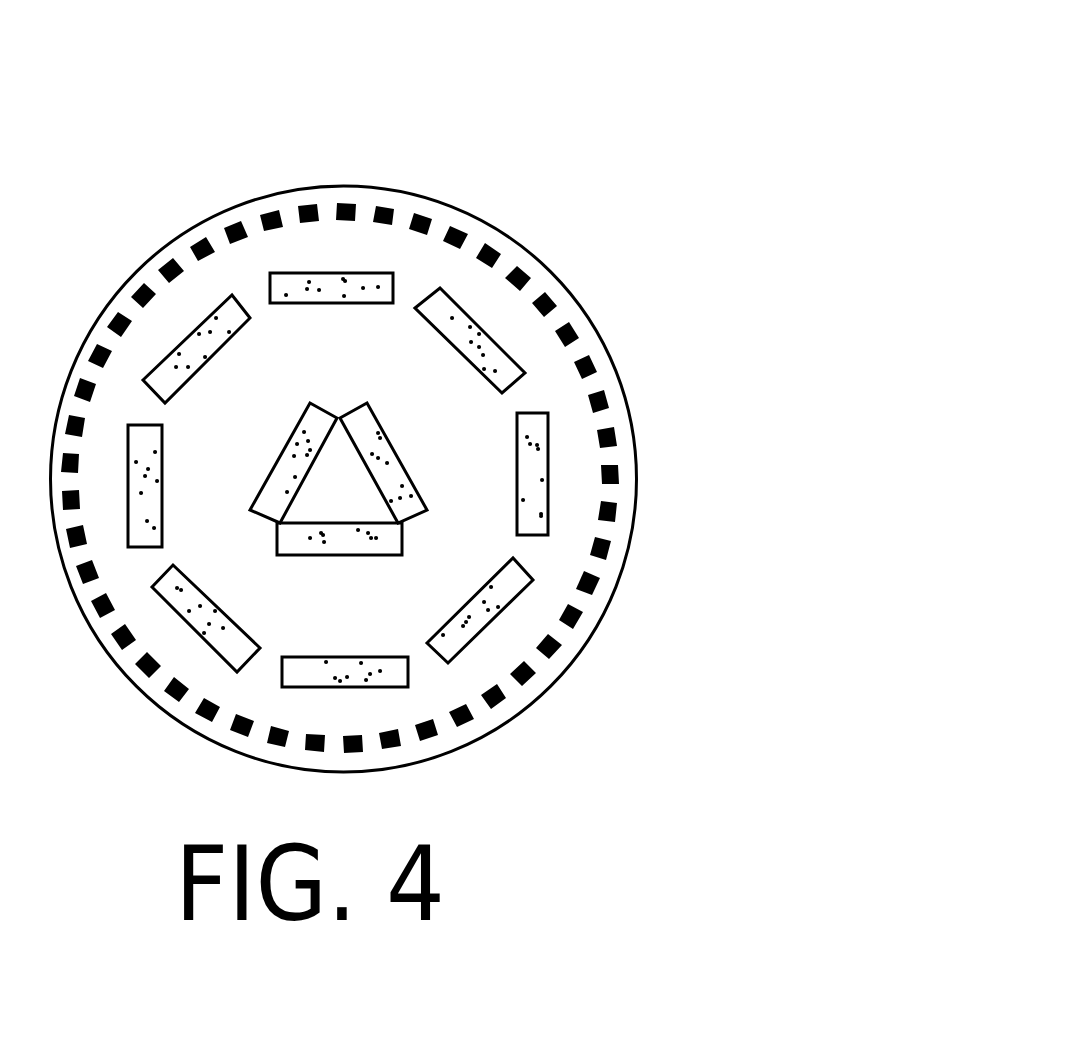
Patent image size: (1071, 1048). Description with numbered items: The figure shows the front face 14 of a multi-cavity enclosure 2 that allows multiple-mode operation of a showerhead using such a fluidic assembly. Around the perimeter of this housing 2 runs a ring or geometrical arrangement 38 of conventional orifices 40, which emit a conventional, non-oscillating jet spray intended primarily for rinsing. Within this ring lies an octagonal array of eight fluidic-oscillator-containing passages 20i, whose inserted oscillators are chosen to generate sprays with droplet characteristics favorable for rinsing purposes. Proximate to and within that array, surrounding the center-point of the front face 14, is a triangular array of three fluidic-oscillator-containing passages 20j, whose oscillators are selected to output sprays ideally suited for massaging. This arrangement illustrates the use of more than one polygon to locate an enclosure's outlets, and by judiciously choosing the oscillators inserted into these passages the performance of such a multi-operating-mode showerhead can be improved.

The multi-cavity enclosure 2 is at (585, 130).
The front face 14 is at (610, 358).
The fluidic-oscillator-containing passages 20i is at (530, 460).
The fluidic-oscillator-containing passages 20j is at (397, 447).
The ring or geometrical arrangement 38 is at (537, 663).
The conventional orifices 40 is at (590, 583).